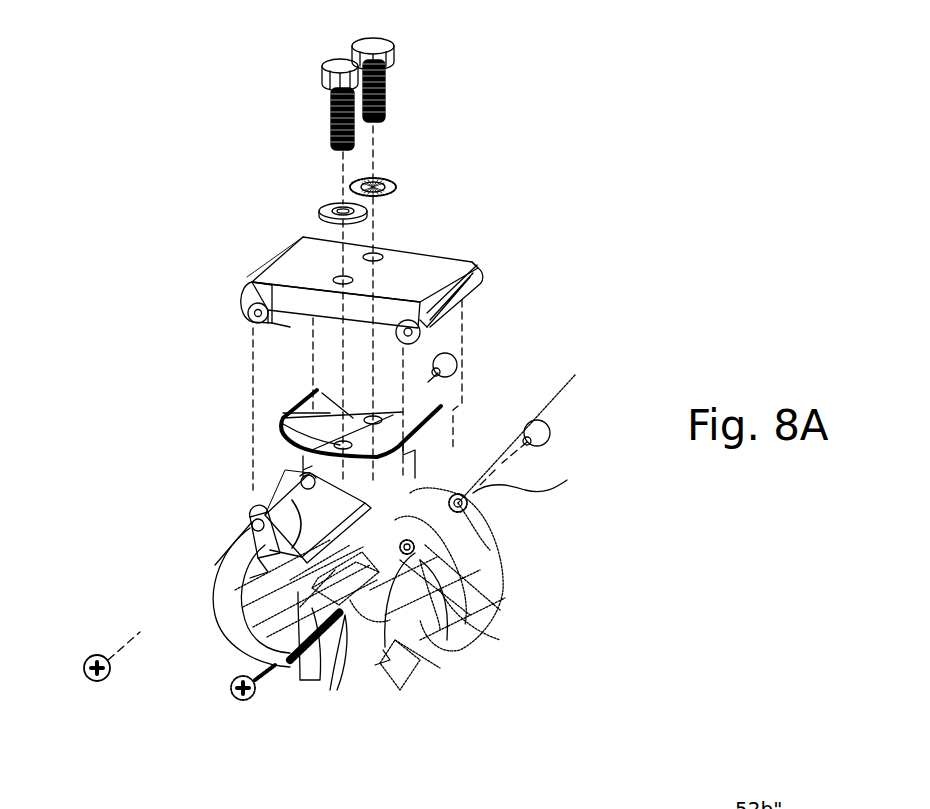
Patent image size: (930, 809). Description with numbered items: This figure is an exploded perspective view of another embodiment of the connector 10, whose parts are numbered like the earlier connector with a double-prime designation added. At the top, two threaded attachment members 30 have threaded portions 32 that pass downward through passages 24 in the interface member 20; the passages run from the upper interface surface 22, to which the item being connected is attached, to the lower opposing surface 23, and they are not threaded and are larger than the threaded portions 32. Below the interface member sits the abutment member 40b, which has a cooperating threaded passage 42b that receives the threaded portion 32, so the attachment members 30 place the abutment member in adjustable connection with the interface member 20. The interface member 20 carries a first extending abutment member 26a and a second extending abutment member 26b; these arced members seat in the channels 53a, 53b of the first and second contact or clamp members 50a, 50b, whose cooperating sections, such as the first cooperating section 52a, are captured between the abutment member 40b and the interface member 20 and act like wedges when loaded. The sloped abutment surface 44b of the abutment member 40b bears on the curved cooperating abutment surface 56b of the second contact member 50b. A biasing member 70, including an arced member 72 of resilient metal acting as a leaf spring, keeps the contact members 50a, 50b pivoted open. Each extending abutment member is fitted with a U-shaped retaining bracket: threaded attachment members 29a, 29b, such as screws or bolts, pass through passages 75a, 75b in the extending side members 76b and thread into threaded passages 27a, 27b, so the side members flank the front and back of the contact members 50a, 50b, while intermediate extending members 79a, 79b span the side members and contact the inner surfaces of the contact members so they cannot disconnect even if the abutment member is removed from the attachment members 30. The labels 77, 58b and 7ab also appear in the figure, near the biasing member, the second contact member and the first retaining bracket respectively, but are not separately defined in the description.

The connector 10 is at (644, 189).
The interface member 20 is at (362, 272).
The interface surface 22 is at (303, 240).
The lower opposing surface 23 is at (297, 312).
The passages 24 is at (357, 283).
The first extending abutment member 26a is at (247, 277).
The second extending abutment member 26b is at (460, 312).
The threaded passages 27a is at (247, 322).
The threaded passages 27b is at (420, 333).
The threaded attachment members 29a is at (458, 366).
The threaded attachment members 29b is at (550, 434).
The threaded attachment members 30 is at (318, 94).
The threaded portion 32 is at (328, 117).
The abutment member 40b is at (300, 607).
The cooperating threaded passage 42b is at (240, 571).
The sloped abutment surface 44b is at (295, 673).
The first contact member 50a is at (213, 620).
The second contact member 50b is at (503, 587).
The first cooperating section 52a is at (267, 500).
The cooperating channel 53a is at (273, 527).
The cooperating channel 53b is at (490, 590).
The cooperating abutment surface 56b is at (337, 697).
The spring 58b is at (377, 663).
The biasing member 70 is at (440, 392).
The arced member 72 is at (312, 389).
The passages 75a is at (267, 507).
The passages 75b is at (490, 550).
The extending side members 76b is at (467, 507).
The bracket web 77 is at (283, 423).
The intermediate extending member 79a is at (250, 547).
The intermediate extending member 79b is at (380, 663).
The linkage 7ab is at (273, 560).